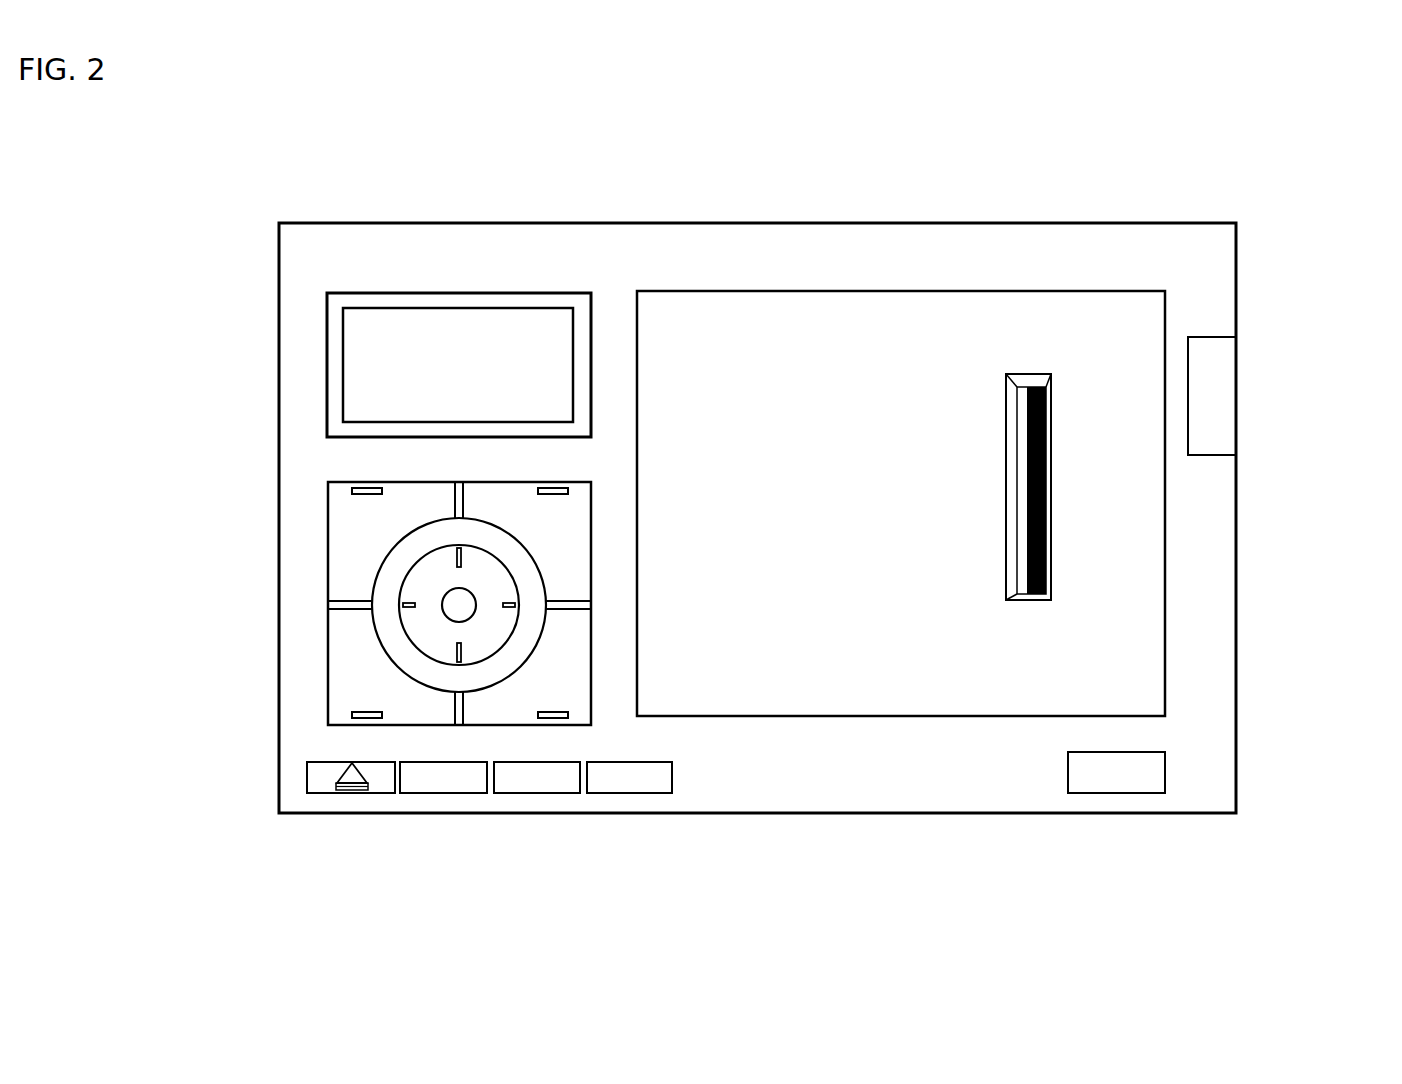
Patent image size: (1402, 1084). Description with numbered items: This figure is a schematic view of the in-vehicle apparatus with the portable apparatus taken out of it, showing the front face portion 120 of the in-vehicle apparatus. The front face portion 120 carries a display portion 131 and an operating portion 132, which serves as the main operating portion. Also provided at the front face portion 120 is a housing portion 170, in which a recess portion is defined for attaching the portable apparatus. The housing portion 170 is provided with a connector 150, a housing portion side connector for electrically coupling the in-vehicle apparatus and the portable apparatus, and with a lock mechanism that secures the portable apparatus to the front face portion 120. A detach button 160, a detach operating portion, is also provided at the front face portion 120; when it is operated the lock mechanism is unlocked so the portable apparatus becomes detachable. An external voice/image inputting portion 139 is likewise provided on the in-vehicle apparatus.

The front face portion 120 is at (472, 253).
The display portion 131 is at (368, 375).
The operating portion 132 is at (295, 588).
The external voice/image inputting portion 139 is at (1118, 785).
The connector 150 is at (1045, 533).
The detach button 160 is at (1217, 398).
The housing portion 170 is at (862, 630).